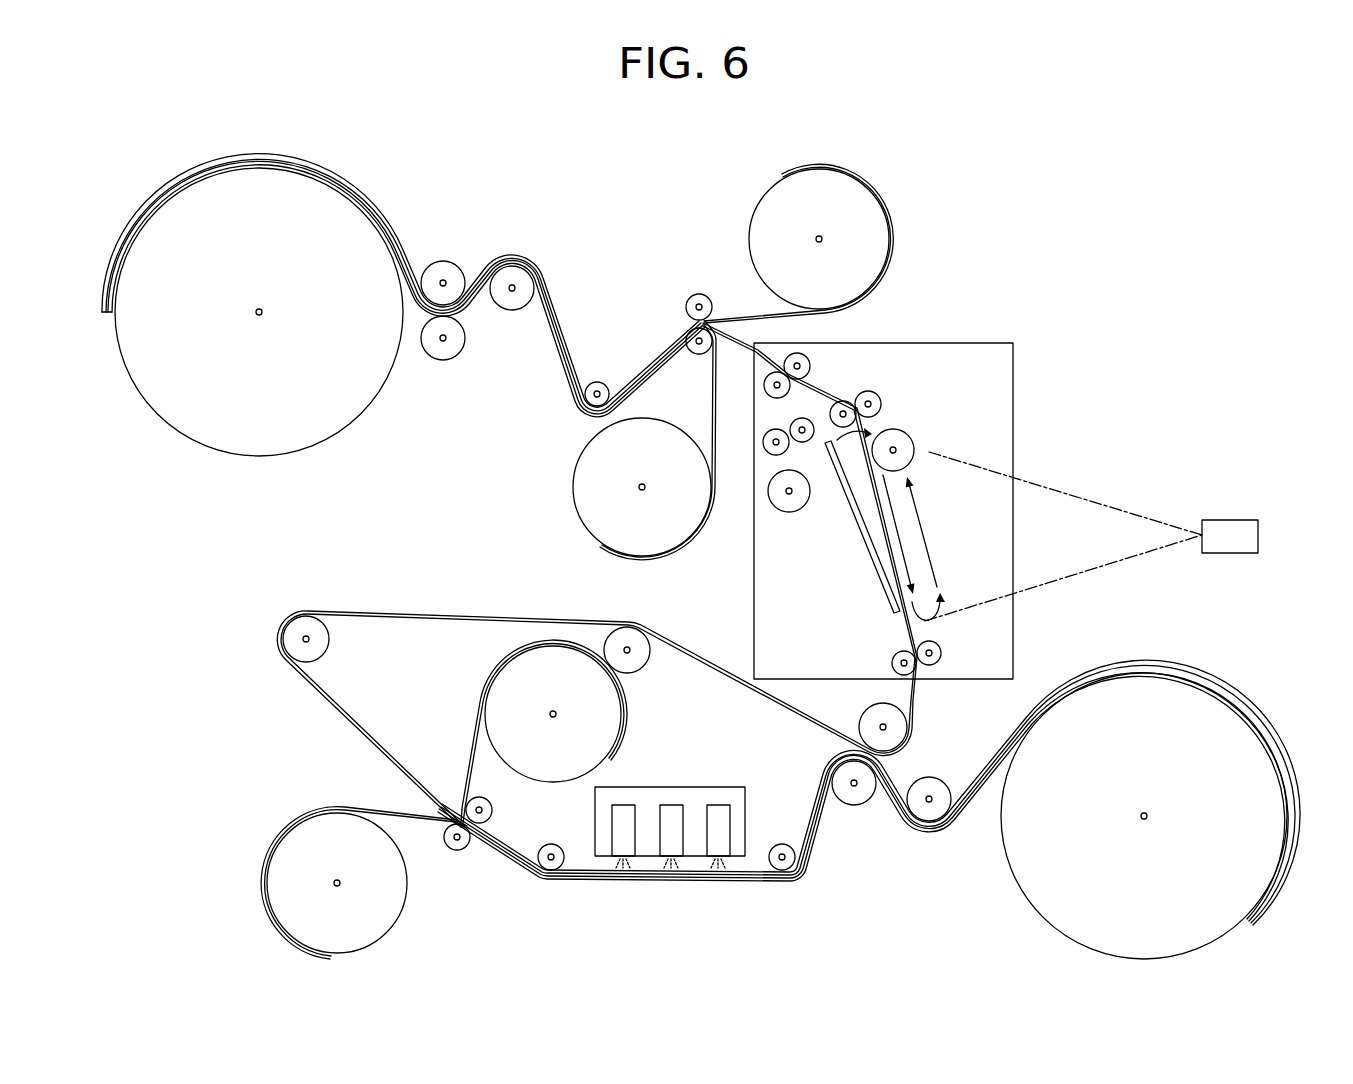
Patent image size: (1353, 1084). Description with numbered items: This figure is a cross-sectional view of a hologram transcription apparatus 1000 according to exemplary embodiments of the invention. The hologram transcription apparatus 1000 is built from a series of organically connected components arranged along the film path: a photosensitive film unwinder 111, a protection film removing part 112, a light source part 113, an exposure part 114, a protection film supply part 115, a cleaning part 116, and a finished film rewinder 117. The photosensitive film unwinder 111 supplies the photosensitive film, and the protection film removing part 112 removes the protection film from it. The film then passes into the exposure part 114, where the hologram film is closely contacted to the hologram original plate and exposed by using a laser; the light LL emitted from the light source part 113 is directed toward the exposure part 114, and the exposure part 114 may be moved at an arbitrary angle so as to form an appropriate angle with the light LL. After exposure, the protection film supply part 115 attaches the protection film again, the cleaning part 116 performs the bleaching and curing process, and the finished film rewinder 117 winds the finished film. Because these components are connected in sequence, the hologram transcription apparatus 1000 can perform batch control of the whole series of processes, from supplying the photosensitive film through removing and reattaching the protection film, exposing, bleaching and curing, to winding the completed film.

The hologram transcription apparatus 1000 is at (1152, 178).
The photosensitive film unwinder 111 is at (257, 454).
The protection film removing part 112 is at (722, 228).
The light source part 113 is at (1230, 520).
The exposure part 114 is at (962, 342).
The protection film supply part 115 is at (310, 768).
The cleaning part 116 is at (713, 787).
The finished film rewinder 117 is at (1033, 888).
The light LL is at (1138, 516).